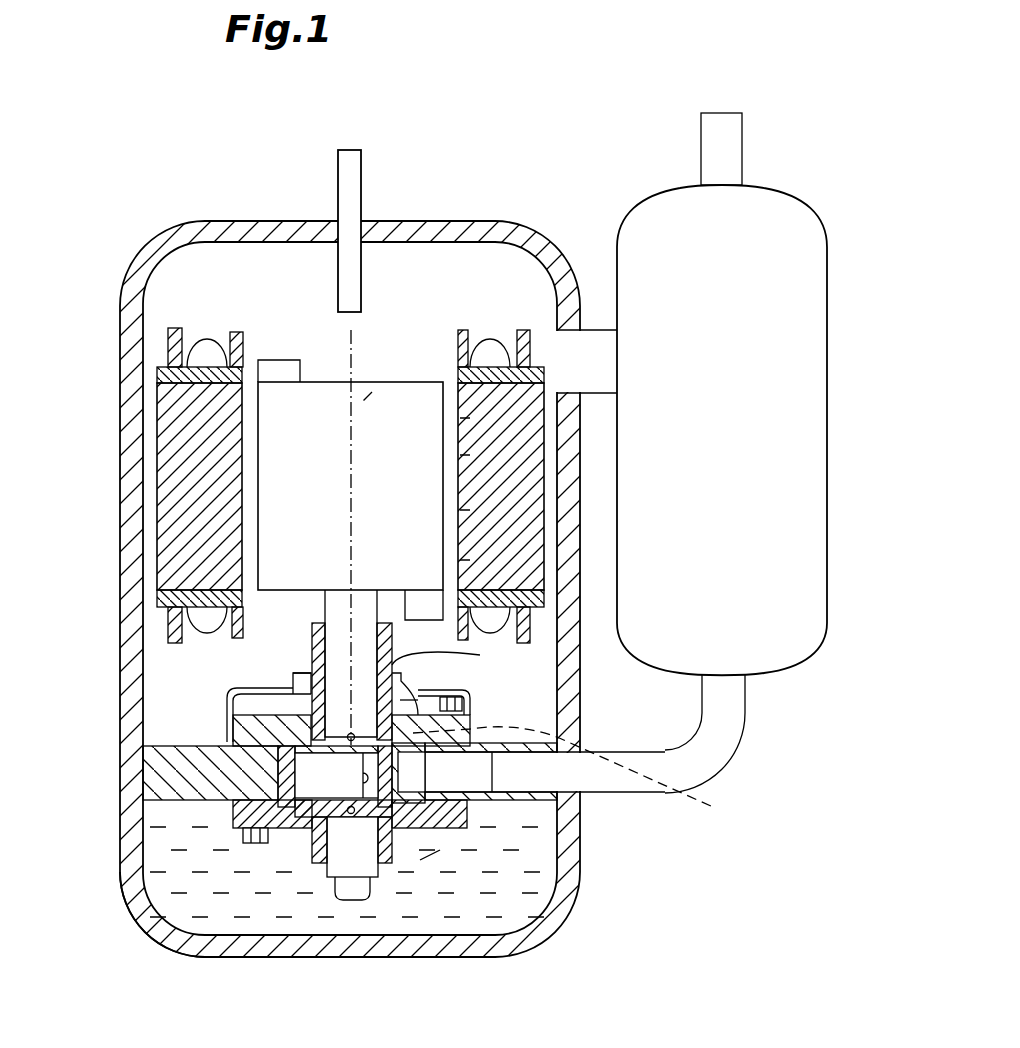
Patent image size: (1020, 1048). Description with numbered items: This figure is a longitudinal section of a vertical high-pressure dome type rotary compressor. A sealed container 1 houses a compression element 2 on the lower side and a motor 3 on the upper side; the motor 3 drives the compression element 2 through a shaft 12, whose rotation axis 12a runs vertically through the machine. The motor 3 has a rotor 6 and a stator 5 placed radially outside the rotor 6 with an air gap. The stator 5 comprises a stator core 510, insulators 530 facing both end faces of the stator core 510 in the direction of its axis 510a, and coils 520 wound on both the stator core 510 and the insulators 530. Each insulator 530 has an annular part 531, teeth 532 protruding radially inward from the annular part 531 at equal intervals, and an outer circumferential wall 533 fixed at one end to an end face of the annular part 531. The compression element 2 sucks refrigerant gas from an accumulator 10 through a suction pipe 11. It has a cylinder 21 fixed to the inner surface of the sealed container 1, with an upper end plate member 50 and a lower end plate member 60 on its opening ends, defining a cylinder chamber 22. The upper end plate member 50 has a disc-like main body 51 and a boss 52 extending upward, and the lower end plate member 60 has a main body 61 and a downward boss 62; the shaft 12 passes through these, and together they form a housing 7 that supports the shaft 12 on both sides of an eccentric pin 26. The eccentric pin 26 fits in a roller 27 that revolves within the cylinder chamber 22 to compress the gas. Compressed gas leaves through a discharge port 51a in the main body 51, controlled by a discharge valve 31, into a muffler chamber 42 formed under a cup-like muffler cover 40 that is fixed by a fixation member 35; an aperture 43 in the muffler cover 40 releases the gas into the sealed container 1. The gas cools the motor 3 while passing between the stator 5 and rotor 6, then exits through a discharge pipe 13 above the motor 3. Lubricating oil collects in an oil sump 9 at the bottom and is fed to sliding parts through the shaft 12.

The sealed container 1 is at (217, 221).
The compression element 2 is at (158, 772).
The motor 3 is at (200, 333).
The stator 5 is at (497, 330).
The rotor 6 is at (322, 393).
The housing 7 is at (160, 935).
The oil sump 9 is at (528, 912).
The accumulator 10 is at (678, 195).
The suction pipe 11 is at (606, 775).
The shaft 12 is at (340, 595).
The rotation axis 12a is at (350, 530).
The discharge pipe 13 is at (362, 175).
The cylinder 21 is at (168, 795).
The cylinder chamber 22 is at (445, 828).
The eccentric pin 26 is at (310, 800).
The roller 27 is at (375, 800).
The discharge valve 31 is at (400, 700).
The fixation member 35 is at (470, 710).
The muffler cover 40 is at (366, 632).
The muffler chamber 42 is at (305, 672).
The aperture 43 is at (287, 703).
The upper end plate member 50 is at (245, 713).
The main body 51 is at (232, 730).
The discharge port 51a is at (591, 773).
The boss 52 is at (398, 664).
The lower end plate member 60 is at (455, 850).
The main body 61 is at (255, 845).
The boss 62 is at (325, 880).
The stator core 510 is at (172, 432).
The axis 510a is at (372, 392).
The coils 520 is at (225, 338).
The insulators 530 is at (160, 375).
The annular part 531 is at (460, 450).
The teeth 532 is at (460, 418).
The outer circumferential wall 533 is at (527, 330).